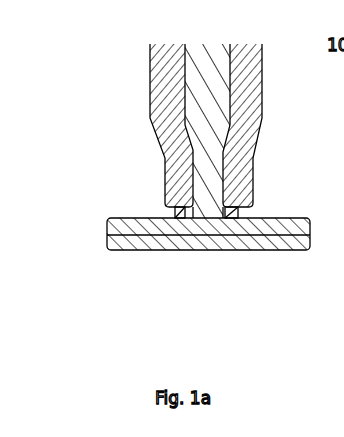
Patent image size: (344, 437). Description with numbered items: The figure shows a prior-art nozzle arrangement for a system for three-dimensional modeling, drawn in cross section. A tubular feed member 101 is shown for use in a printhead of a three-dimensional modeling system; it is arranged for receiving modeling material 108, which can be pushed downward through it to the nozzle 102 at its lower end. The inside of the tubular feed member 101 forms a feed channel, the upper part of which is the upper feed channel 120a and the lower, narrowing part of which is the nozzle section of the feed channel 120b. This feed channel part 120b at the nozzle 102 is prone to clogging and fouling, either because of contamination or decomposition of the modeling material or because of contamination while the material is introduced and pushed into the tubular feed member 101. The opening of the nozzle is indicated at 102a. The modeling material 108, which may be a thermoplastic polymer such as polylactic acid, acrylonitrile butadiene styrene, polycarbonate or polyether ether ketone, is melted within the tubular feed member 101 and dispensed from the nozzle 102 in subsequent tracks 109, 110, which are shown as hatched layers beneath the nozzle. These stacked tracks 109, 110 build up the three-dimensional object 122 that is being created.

The tubular feed member 101 is at (133, 62).
The nozzle 102 is at (258, 190).
The tube open end 102a is at (213, 210).
The modeling material 108 is at (200, 130).
The track 109 is at (274, 249).
The track 110 is at (180, 216).
The upper feed channel 120a is at (185, 88).
The nozzle section of the feed channel 120b is at (190, 178).
The three-dimensional object 122 is at (108, 246).